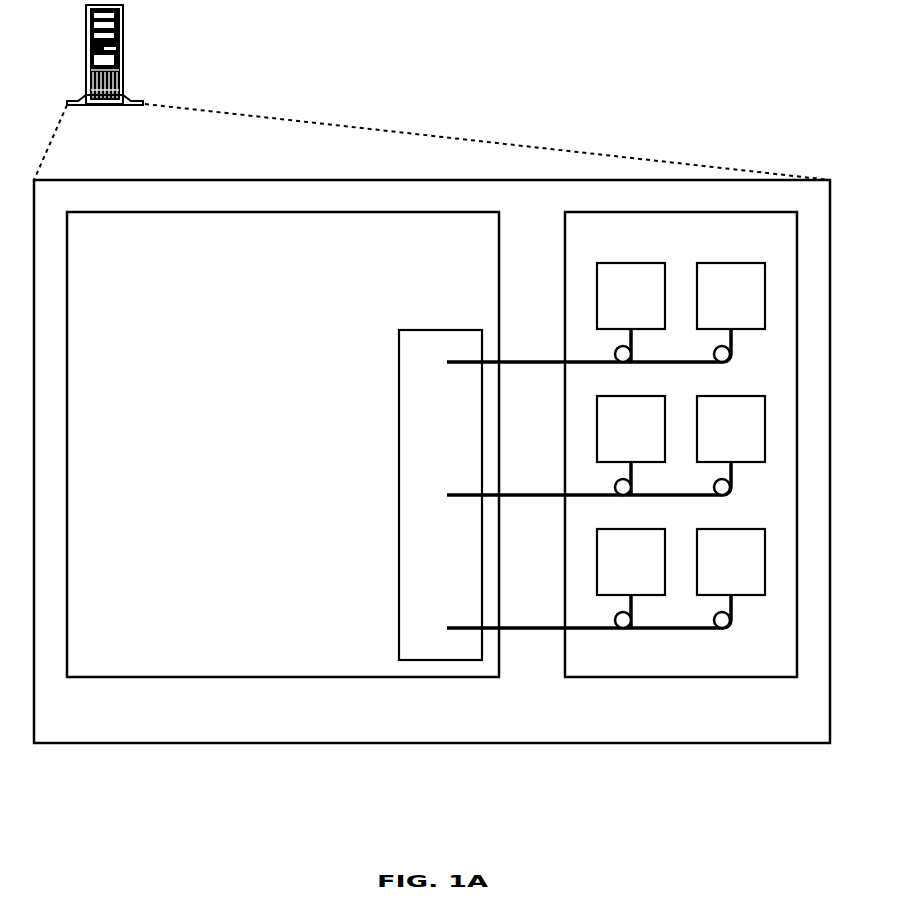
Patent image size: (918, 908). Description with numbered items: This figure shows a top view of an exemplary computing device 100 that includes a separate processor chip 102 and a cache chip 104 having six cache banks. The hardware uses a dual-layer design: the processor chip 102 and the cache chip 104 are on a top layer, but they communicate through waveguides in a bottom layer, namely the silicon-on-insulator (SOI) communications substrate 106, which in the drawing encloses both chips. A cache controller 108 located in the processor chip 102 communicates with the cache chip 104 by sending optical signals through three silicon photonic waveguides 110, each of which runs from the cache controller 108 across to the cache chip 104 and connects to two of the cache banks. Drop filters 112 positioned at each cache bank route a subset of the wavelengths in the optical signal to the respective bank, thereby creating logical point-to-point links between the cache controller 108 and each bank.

The computing device 100 is at (432, 92).
The processor chip 102 is at (283, 444).
The cache chip 104 is at (681, 444).
The silicon-on-insulator (SOI) communications substrate 106 is at (432, 461).
The cache controller 108 is at (395, 330).
The silicon photonic waveguides 110 is at (539, 621).
The drop filters 112 is at (722, 632).